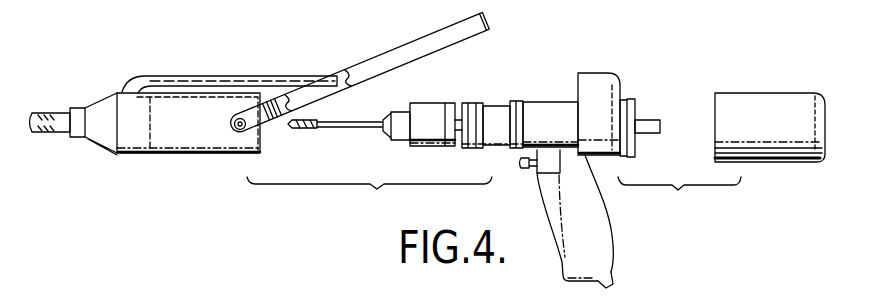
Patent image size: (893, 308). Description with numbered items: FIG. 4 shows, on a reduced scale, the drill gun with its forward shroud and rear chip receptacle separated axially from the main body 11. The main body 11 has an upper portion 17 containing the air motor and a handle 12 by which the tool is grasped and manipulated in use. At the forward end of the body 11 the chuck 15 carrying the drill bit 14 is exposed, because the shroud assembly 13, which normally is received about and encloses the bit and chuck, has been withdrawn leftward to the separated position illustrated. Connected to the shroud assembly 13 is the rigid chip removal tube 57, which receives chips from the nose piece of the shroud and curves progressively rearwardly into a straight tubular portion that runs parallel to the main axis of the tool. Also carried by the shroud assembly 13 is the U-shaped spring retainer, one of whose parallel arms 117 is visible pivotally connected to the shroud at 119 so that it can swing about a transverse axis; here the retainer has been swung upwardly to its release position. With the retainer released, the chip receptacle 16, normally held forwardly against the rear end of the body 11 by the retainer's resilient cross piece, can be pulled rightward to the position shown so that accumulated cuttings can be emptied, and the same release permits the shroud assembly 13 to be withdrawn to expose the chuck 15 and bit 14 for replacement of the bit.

The main body 11 is at (528, 150).
The handle 12 is at (597, 247).
The shroud assembly 13 is at (172, 145).
The drill bit 14 is at (297, 128).
The chuck 15 is at (423, 136).
The chip receptacle 16 is at (755, 95).
The upper portion 17 is at (535, 100).
The chip removal tube 57 is at (208, 77).
The arms 117 is at (402, 50).
The pivotal connection 119 is at (233, 124).